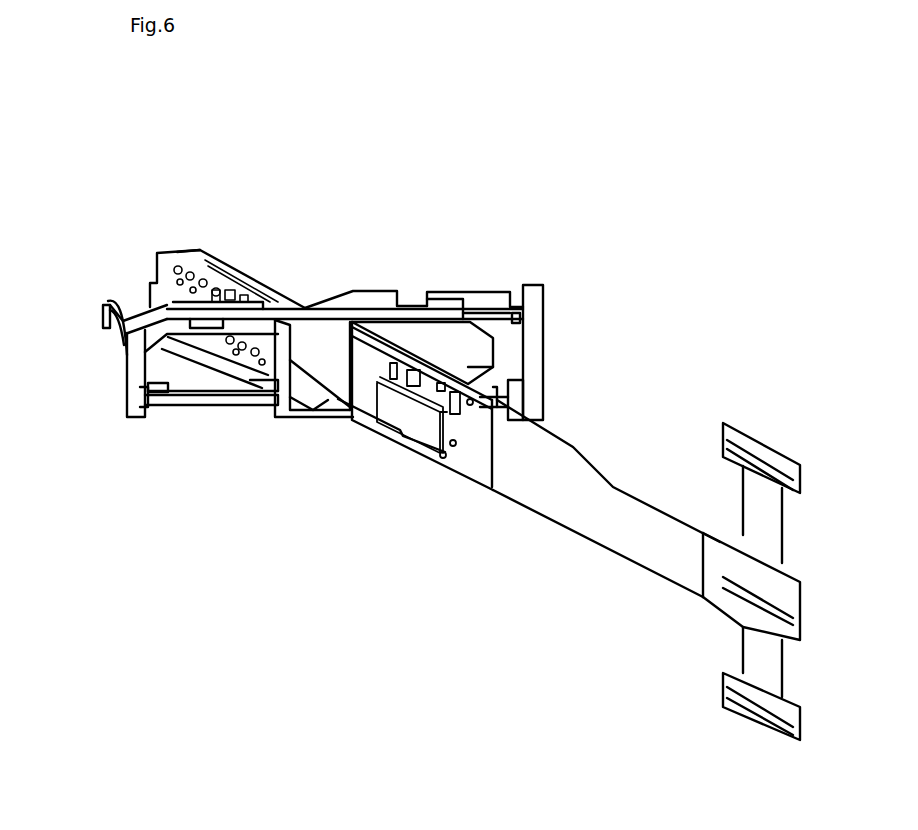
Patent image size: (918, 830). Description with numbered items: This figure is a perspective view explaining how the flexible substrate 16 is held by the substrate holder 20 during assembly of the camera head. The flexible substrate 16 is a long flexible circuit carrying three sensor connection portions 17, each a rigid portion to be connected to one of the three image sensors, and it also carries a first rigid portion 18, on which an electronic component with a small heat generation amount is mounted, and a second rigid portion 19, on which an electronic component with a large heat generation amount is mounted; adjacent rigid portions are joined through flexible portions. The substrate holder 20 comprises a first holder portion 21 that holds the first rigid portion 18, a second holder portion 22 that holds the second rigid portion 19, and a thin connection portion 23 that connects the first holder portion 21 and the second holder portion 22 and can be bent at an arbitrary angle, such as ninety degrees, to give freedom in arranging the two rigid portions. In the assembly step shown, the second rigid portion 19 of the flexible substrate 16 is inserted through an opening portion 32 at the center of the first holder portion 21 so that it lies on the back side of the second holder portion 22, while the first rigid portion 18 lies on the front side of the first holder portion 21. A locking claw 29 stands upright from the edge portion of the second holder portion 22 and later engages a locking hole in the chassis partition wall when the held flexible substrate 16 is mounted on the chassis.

The flexible substrate 16 is at (598, 537).
The sensor connection portion 17 is at (790, 449).
The first rigid portion 18 is at (475, 468).
The second rigid portion 19 is at (210, 270).
The substrate holder 20 is at (548, 343).
The first holder portion 21 is at (457, 292).
The second holder portion 22 is at (210, 407).
The connection portion 23 is at (300, 403).
The locking claw 29 is at (105, 317).
The opening portion 32 is at (384, 330).